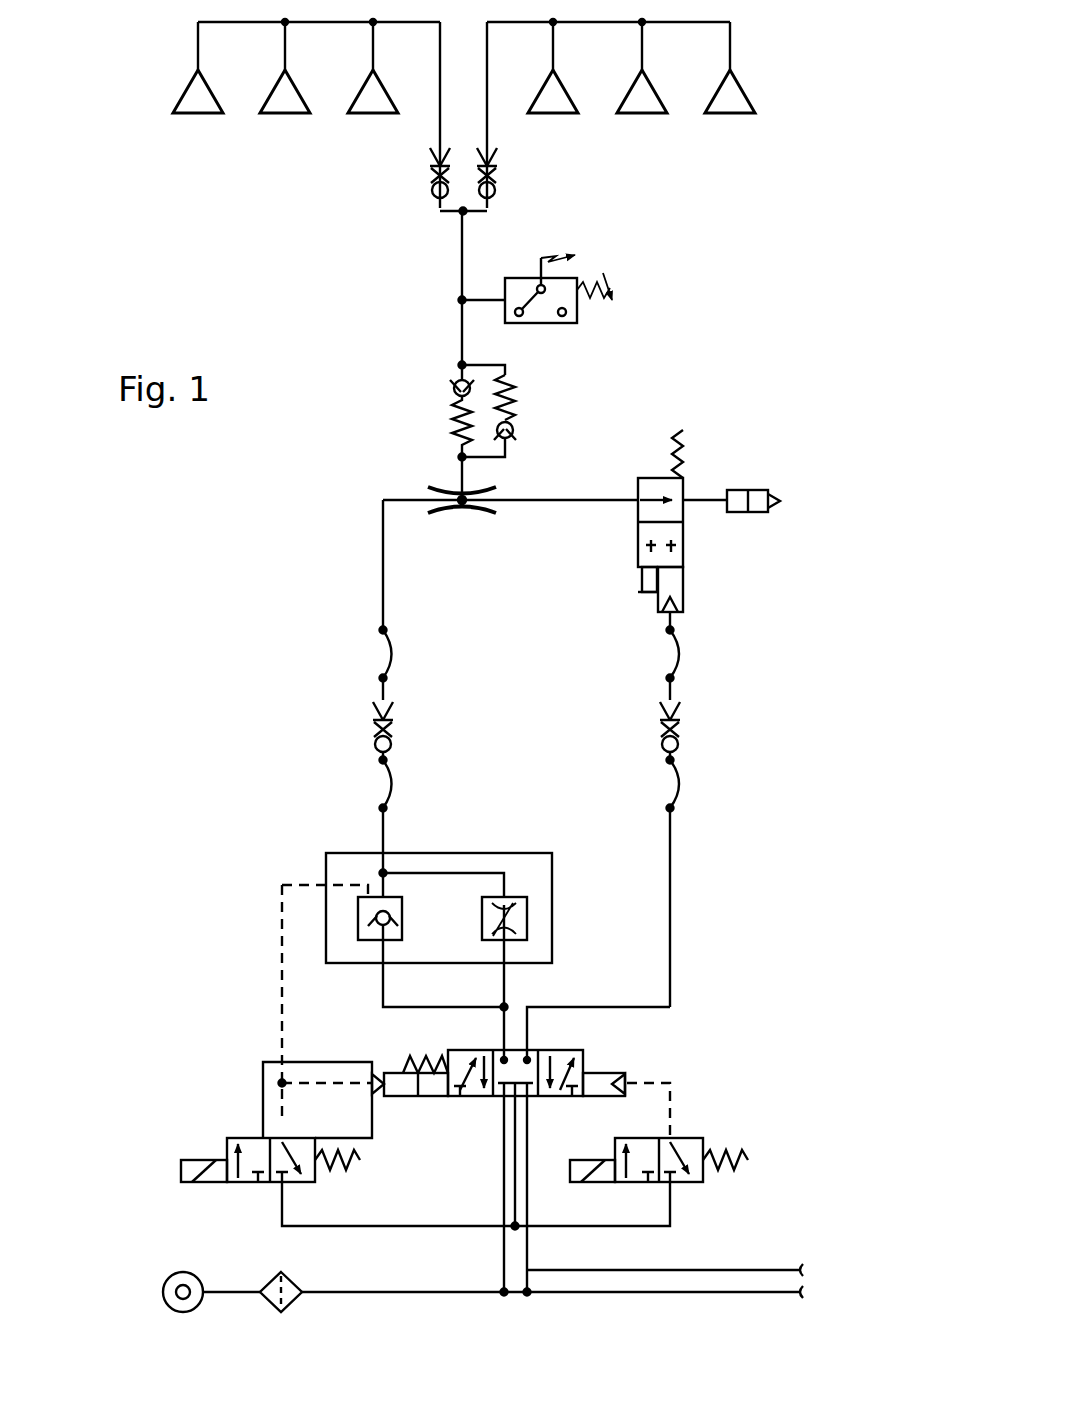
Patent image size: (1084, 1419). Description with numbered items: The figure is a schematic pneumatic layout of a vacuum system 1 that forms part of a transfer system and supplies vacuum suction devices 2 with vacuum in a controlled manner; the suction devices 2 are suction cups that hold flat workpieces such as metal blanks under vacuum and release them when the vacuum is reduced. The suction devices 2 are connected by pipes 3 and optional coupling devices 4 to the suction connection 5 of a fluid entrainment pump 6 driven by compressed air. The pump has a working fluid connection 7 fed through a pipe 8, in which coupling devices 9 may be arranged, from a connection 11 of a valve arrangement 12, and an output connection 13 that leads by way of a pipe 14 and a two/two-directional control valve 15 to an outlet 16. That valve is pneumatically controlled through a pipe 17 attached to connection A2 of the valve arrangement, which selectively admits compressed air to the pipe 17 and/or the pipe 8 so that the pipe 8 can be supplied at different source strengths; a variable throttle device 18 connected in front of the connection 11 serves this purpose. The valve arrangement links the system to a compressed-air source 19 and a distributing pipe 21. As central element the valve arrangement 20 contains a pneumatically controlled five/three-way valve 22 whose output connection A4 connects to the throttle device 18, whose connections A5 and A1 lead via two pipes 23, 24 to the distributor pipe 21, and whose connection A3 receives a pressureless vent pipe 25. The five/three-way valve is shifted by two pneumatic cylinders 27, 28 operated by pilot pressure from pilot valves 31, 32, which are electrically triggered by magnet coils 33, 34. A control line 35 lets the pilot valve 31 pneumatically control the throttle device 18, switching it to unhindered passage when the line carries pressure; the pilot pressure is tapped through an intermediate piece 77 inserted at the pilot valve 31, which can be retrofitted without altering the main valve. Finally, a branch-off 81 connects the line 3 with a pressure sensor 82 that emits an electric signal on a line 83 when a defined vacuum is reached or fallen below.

The vacuum system 1 is at (290, 604).
The vacuum suction devices 2 is at (285, 120).
The pipes 3 is at (440, 128).
The coupling devices 4 is at (426, 205).
The suction connection 5 is at (456, 470).
The fluid entrainment pump 6 is at (464, 514).
The working fluid connection 7 is at (412, 495).
The pipe 8 is at (384, 594).
The coupling devices 9 is at (408, 728).
The connection 11 is at (385, 852).
The valve arrangement 12 is at (696, 956).
The output connection 13 is at (506, 488).
The pipe 14 is at (549, 502).
The 2/2-directional control valve 15 is at (692, 463).
The outlet 16 is at (784, 490).
The pipe 17 is at (676, 622).
The variable throttle device 18 is at (322, 832).
The compressed-air source 19 is at (183, 1272).
The valve arrangement 20 is at (380, 1259).
The distributing pipe 21 is at (432, 1294).
The 5/3-way valve 22 is at (602, 1046).
The pipe 23 is at (503, 1147).
The pipe 24 is at (514, 1167).
The pressureless vent pipe 25 is at (525, 1202).
The pneumatic cylinder 27 is at (394, 1072).
The pneumatic cylinder 28 is at (626, 1073).
The pilot valve 31 is at (232, 1136).
The pilot valve 32 is at (706, 1138).
The magnet coil 33 is at (205, 1185).
The magnet coil 34 is at (588, 1192).
The control line 35 is at (281, 910).
The intermediate piece 77 is at (265, 1060).
The branch-off 81 is at (486, 300).
The pressure sensor 82 is at (584, 324).
The line 83 is at (545, 262).
The connection A1 is at (517, 1147).
The connection A2 is at (570, 1028).
The connection A3 is at (528, 1122).
The output connection A4 is at (453, 1028).
The connection A5 is at (503, 1119).